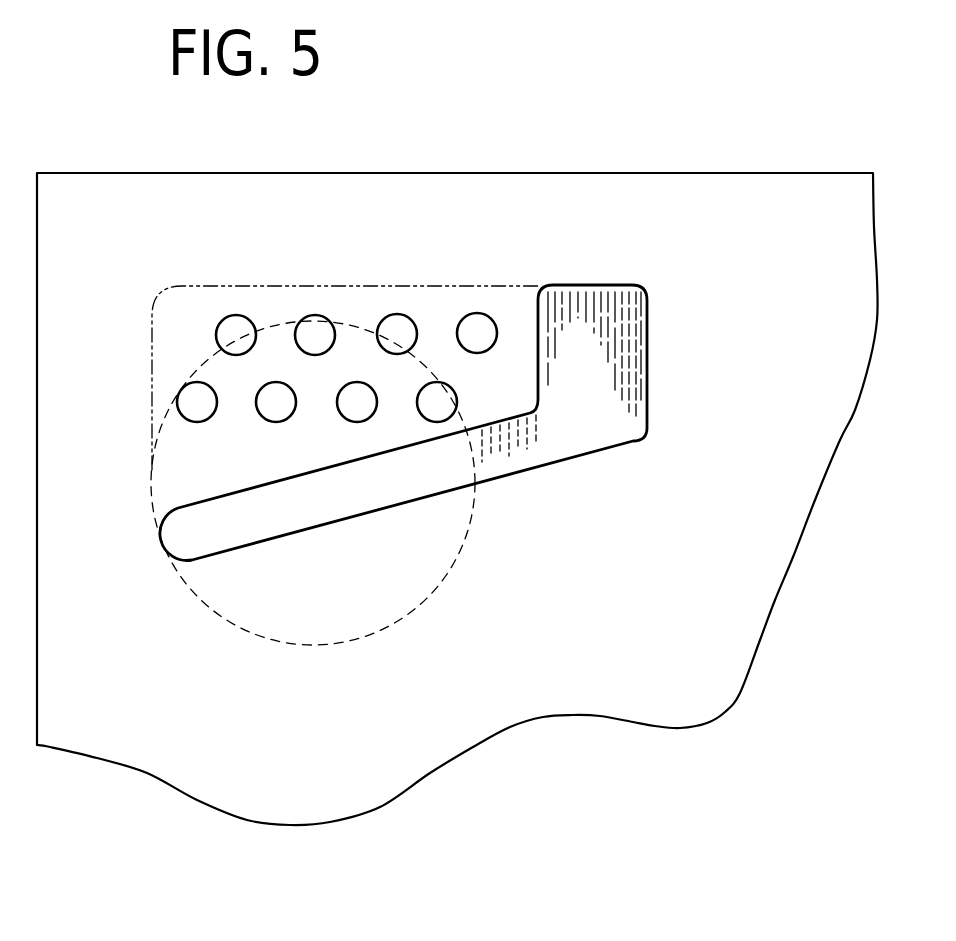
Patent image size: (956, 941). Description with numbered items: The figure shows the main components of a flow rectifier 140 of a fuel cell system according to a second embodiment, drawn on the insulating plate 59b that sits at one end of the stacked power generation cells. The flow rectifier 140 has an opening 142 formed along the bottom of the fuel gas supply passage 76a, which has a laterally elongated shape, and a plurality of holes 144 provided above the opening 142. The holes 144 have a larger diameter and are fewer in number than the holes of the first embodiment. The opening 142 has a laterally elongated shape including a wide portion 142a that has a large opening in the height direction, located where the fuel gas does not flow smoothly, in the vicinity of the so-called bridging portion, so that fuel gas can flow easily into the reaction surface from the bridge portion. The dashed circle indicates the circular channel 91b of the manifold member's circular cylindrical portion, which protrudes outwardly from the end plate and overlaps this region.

The insulating plate 59b is at (582, 93).
The circular channel 91b is at (268, 625).
The flow rectifier 140 is at (293, 312).
The holes 144 is at (478, 332).
The opening 142 is at (312, 495).
The wide portion 142a is at (583, 363).
The fuel gas supply passage 76a is at (650, 325).